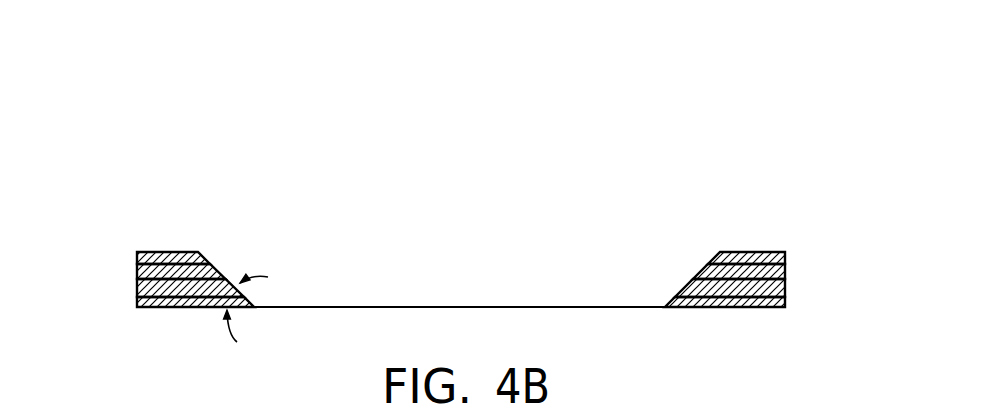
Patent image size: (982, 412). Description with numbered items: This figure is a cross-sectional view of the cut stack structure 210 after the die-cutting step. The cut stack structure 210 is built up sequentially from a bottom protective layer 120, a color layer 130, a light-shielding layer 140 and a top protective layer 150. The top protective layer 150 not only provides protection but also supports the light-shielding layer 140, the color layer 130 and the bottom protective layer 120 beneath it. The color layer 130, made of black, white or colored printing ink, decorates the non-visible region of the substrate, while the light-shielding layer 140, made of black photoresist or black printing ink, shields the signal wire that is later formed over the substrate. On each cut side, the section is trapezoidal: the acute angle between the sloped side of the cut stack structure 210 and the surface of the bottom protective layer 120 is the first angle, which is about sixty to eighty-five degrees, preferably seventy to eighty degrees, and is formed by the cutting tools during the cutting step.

The cut stack structure 210 is at (130, 205).
The top protective layer 150 is at (137, 258).
The light-shielding layer 140 is at (137, 271).
The color layer 130 is at (137, 290).
The bottom protective layer 120 is at (137, 303).